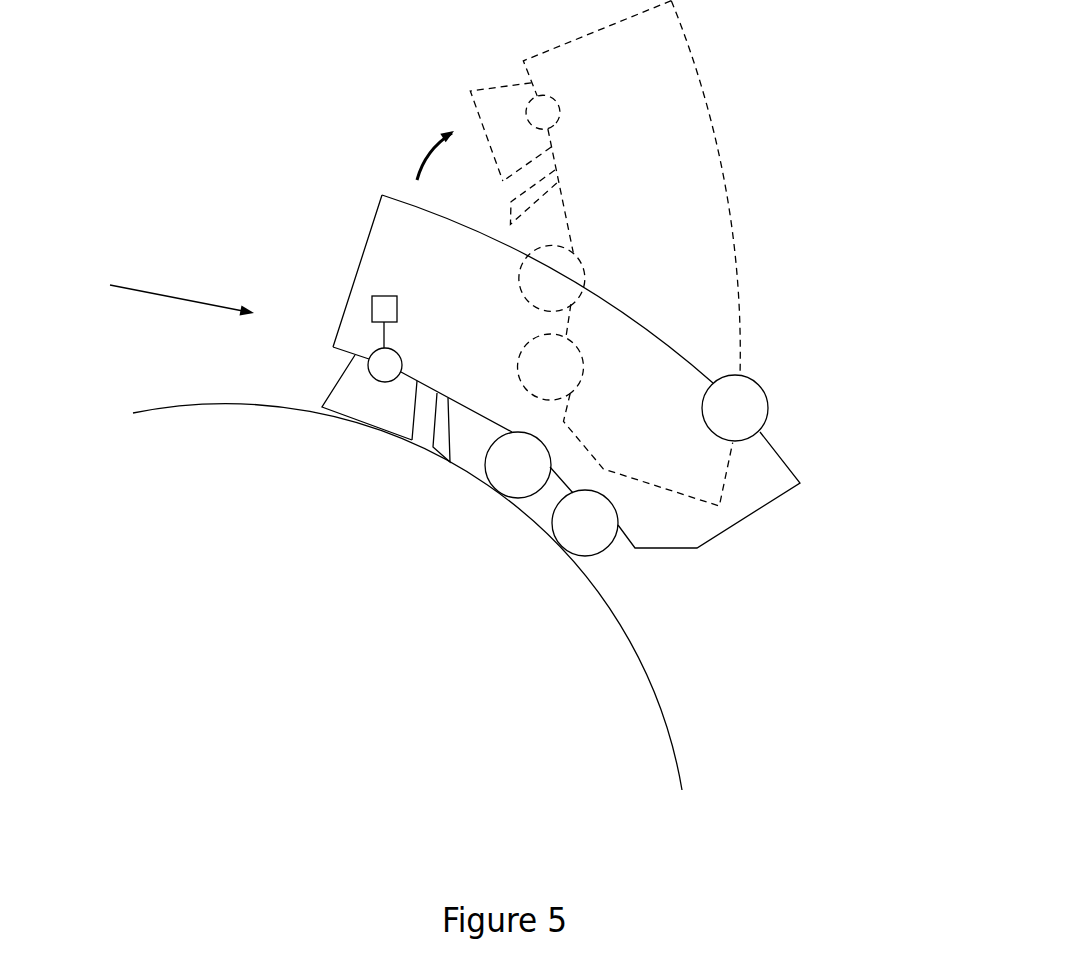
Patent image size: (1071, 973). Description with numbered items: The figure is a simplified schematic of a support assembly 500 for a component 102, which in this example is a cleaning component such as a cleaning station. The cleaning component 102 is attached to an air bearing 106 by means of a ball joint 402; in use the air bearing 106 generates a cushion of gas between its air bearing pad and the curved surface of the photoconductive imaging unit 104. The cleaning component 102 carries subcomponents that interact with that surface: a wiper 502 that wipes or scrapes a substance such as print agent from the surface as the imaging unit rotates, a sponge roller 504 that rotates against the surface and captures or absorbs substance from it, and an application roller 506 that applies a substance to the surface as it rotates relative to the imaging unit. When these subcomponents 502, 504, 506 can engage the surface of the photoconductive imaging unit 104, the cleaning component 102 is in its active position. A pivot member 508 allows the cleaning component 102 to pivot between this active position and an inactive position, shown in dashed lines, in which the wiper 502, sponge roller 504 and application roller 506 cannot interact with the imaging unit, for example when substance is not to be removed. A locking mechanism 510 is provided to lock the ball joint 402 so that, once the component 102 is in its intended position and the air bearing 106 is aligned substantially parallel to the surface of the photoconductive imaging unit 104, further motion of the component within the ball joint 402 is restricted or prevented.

The cleaning component 102 is at (385, 235).
The photoconductive imaging unit 104 is at (382, 655).
The air bearing 106 is at (340, 388).
The ball joint 402 is at (375, 352).
The support assembly 500 is at (153, 293).
The wiper 502 is at (430, 452).
The sponge roller 504 is at (500, 490).
The application roller 506 is at (585, 552).
The pivot member 508 is at (758, 393).
The locking mechanism 510 is at (373, 297).